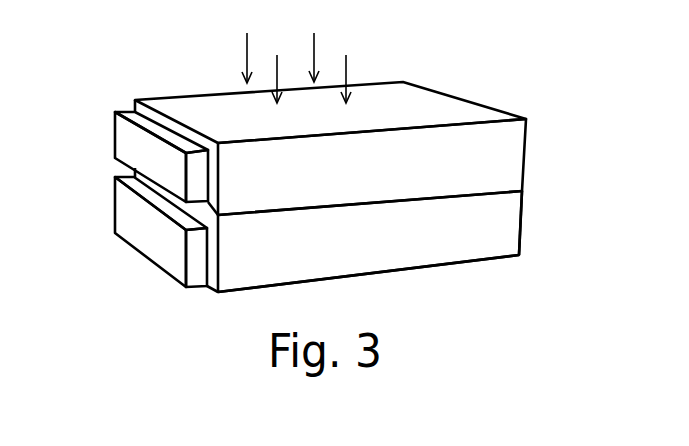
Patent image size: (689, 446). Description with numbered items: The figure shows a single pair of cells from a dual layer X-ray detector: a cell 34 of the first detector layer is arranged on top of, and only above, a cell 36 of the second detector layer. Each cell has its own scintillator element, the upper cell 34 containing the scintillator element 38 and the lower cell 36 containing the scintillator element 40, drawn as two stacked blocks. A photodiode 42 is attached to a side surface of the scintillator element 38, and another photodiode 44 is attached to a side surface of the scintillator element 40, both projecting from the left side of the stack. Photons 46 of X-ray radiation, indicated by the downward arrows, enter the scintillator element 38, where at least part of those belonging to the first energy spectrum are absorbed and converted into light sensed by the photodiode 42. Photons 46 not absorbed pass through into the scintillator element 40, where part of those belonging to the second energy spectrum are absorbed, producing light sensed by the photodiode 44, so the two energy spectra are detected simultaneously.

The cell of the first detector layer 34 is at (556, 120).
The cell of the second detector layer 36 is at (552, 208).
The scintillator element 38 is at (452, 168).
The scintillator element 40 is at (466, 236).
The photodiode 42 is at (140, 151).
The photodiode 44 is at (148, 242).
The photons 46 is at (303, 62).